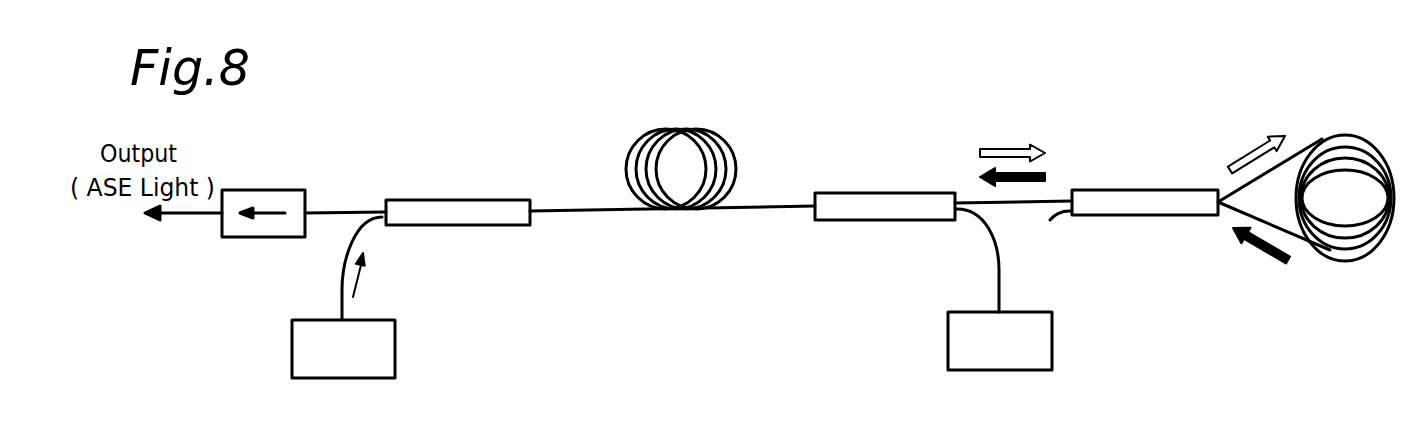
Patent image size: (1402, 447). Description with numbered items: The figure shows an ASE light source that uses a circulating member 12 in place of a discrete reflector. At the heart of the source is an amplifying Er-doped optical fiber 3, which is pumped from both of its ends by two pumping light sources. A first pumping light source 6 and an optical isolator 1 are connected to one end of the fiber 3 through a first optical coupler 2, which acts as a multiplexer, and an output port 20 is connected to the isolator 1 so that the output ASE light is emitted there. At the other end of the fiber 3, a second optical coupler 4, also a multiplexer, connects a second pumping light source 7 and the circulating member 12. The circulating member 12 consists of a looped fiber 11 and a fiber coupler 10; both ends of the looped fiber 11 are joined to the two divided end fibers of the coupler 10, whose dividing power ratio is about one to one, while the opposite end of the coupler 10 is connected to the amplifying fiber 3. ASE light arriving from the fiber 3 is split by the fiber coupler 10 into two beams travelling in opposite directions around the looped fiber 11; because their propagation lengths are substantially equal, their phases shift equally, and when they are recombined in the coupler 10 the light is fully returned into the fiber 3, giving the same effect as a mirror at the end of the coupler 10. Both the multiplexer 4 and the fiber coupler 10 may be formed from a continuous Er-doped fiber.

The optical isolator 1 is at (258, 190).
The first optical coupler 2 is at (470, 200).
The amplifying Er-doped optical fiber 3 is at (714, 209).
The second optical coupler 4 is at (898, 193).
The first pumping light source 6 is at (396, 342).
The second pumping light source 7 is at (947, 342).
The fiber coupler 10 is at (1187, 190).
The looped fiber 11 is at (1327, 140).
The circulating member 12 is at (1307, 90).
The output port 20 is at (178, 216).